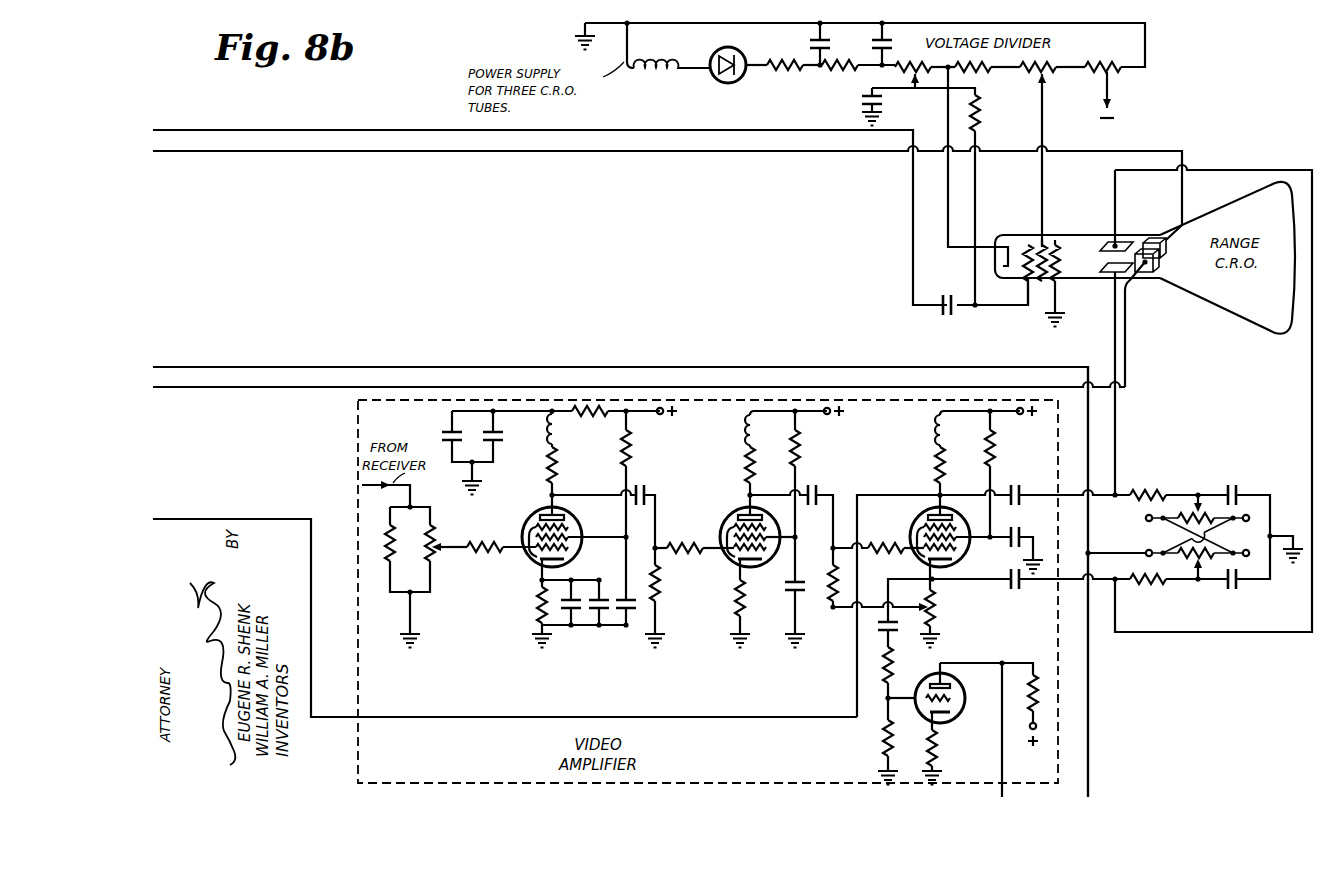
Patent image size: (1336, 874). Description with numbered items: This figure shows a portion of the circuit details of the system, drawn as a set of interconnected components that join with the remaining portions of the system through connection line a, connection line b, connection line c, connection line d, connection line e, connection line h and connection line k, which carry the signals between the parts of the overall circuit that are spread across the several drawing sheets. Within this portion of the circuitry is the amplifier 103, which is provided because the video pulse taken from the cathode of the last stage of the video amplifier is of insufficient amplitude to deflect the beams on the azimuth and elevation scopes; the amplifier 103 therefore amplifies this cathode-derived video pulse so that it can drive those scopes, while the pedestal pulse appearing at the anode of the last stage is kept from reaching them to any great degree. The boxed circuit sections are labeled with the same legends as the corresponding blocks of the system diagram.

The connection line a is at (183, 124).
The connection line b is at (167, 156).
The connection line c is at (186, 353).
The connection line d is at (167, 391).
The connection line e is at (171, 519).
The connection line h is at (1007, 793).
The connection line k is at (1092, 796).
The amplifier 103 is at (950, 720).